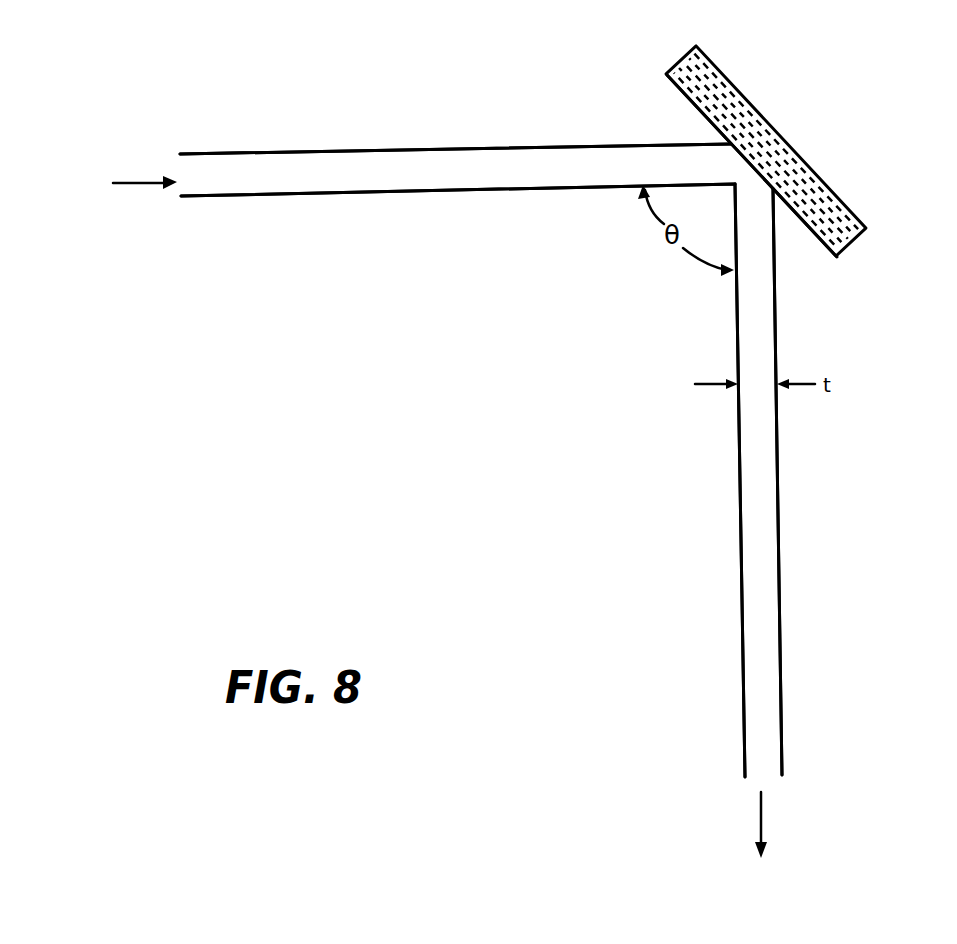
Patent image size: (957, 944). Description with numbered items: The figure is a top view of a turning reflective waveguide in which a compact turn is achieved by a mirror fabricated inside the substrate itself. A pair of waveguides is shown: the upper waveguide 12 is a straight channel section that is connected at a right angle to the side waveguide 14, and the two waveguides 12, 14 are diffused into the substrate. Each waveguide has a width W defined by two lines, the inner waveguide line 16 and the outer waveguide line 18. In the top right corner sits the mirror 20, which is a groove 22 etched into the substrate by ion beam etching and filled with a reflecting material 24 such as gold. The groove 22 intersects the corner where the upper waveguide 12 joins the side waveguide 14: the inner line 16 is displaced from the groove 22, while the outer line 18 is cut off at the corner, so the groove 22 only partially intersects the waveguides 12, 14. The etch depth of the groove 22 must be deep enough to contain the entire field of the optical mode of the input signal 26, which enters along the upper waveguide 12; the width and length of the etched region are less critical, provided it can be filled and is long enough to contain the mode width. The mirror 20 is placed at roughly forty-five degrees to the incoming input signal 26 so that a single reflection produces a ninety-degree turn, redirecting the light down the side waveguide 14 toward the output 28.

The upper waveguide 12 is at (280, 177).
The side waveguide 14 is at (762, 582).
The waveguide line 16 is at (375, 197).
The waveguide line 18 is at (343, 154).
The mirror 20 is at (727, 75).
The groove 22 is at (856, 209).
The reflecting material 24 is at (750, 108).
The input signal 26 is at (126, 189).
The output light 28 is at (756, 843).